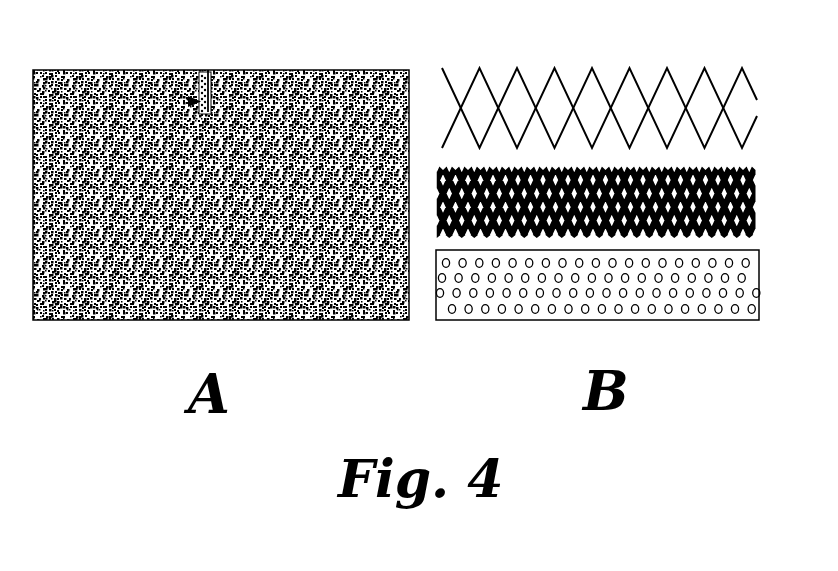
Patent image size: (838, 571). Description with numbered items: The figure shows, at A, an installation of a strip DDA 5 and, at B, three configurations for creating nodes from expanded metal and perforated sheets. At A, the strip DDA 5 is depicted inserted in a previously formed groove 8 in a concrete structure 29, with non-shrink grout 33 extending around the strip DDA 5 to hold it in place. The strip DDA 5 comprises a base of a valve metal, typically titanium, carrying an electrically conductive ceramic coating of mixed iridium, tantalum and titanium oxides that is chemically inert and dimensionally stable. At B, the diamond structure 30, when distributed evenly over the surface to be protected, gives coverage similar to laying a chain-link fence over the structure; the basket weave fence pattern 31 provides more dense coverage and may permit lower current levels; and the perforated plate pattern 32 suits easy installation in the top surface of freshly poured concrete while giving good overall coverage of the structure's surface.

The strip DDA 5 is at (189, 102).
The groove 8 is at (213, 95).
The concrete structure 29 is at (353, 304).
The non-shrink grout 33 is at (204, 72).
The diamond structure 30 is at (593, 66).
The basket weave fence pattern 31 is at (759, 197).
The perforated plate pattern 32 is at (520, 320).